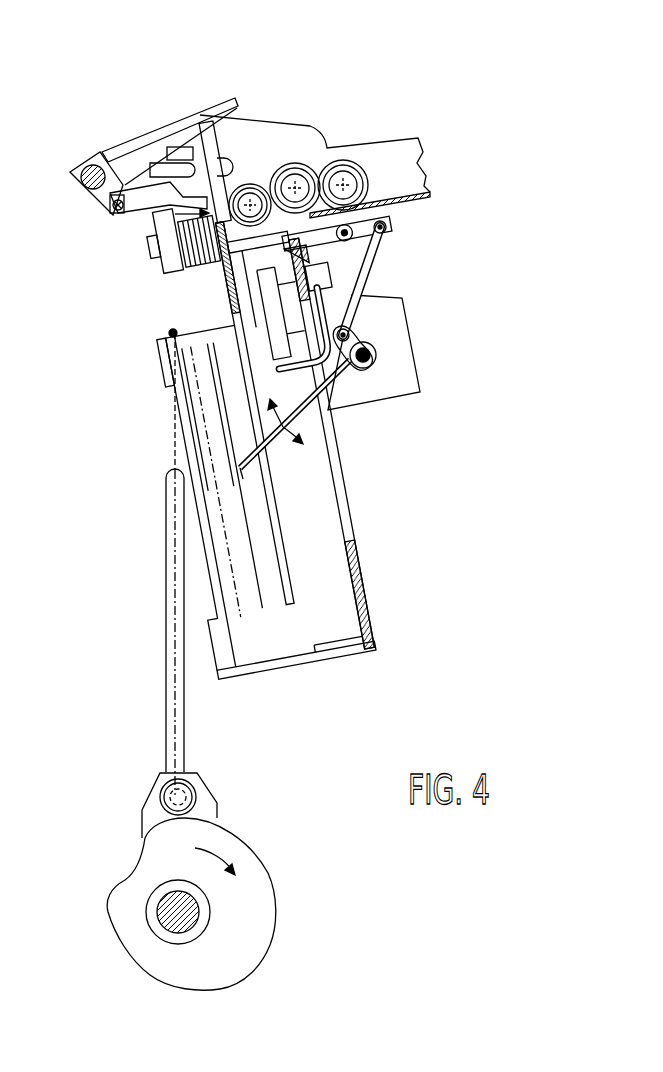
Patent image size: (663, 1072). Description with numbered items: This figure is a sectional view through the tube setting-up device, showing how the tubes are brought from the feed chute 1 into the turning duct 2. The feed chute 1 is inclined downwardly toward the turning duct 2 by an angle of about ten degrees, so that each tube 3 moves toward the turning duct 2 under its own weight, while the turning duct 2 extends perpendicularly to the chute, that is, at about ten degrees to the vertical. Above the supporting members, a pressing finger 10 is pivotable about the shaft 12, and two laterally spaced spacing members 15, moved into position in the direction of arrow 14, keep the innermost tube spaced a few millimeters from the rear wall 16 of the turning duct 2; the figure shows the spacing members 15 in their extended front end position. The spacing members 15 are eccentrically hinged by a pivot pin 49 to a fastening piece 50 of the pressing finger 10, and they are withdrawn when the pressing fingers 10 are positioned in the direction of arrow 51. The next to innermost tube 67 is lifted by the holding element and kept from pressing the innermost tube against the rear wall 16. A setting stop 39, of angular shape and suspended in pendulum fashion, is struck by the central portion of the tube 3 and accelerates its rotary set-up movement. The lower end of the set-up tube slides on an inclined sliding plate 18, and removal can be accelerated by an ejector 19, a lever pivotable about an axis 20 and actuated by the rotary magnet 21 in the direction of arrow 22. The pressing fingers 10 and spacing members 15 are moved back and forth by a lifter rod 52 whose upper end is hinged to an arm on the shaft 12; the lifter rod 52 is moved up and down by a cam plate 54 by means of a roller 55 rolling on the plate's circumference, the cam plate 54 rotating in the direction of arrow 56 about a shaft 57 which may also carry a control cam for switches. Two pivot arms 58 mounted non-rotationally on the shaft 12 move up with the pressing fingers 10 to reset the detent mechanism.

The feed chute 1 is at (410, 190).
The turning duct 2 is at (327, 525).
The tube 3 is at (252, 183).
The pressing finger 10 is at (236, 98).
The shaft 12 is at (93, 165).
The arrow 14 is at (173, 243).
The spacing member 15 is at (193, 260).
The rear wall 16 is at (225, 172).
The sliding plate 18 is at (287, 663).
The ejector 19 is at (325, 420).
The axis 20 is at (377, 355).
The rotary magnet 21 is at (403, 342).
The arrow 22 is at (290, 445).
The setting stop 39 is at (323, 305).
The pivot pin 49 is at (114, 214).
The fastening piece 50 is at (73, 175).
The arrow 51 is at (196, 82).
The lifter rod 52 is at (172, 693).
The cam plate 54 is at (253, 873).
The roller 55 is at (195, 797).
The arrow 56 is at (222, 850).
The shaft 57 is at (200, 909).
The pivot arm 58 is at (162, 166).
The next to innermost tube 67 is at (302, 162).